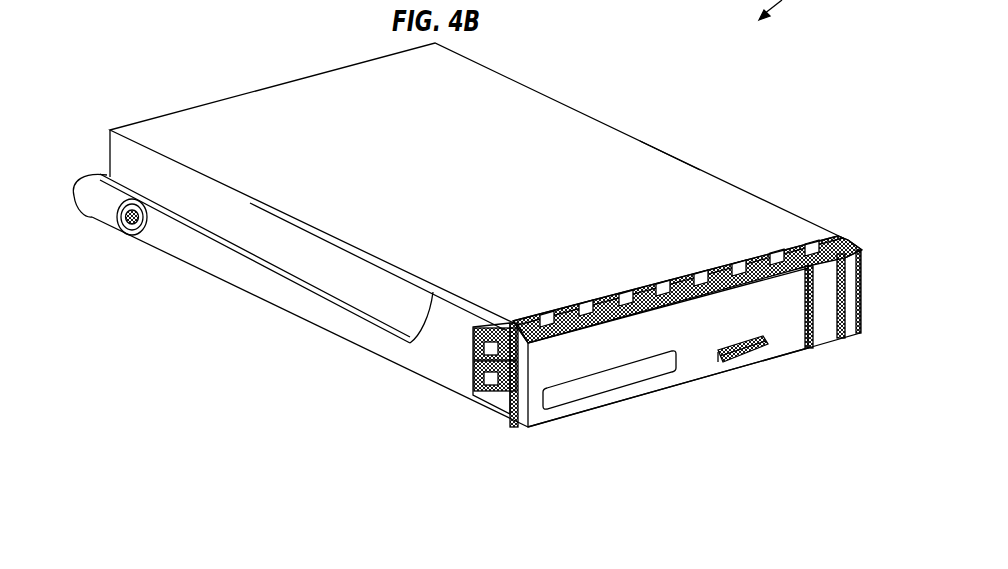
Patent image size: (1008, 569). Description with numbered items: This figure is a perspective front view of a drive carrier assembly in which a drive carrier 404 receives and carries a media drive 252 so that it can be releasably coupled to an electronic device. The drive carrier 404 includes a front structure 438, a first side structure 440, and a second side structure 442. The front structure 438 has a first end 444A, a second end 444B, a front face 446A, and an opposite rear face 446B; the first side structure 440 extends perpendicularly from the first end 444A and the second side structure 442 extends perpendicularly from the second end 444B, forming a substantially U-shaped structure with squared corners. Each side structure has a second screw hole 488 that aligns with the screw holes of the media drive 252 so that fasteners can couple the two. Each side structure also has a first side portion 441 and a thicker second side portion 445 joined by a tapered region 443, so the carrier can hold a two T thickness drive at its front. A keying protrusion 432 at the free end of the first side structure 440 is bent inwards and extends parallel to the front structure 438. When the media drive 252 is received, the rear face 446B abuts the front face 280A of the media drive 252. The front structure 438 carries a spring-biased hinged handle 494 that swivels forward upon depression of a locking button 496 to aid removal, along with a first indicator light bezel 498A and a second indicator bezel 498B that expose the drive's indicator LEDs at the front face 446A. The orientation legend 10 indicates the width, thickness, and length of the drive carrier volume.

The media drive 252 is at (557, 136).
The drive carrier 404 is at (185, 210).
The second side structure 442 is at (700, 167).
The keying protrusion 432 is at (103, 180).
The second screw hole 488 is at (128, 222).
The first side structure 440 is at (227, 272).
The first side portion 441 is at (320, 316).
The tapered region 443 is at (412, 340).
The second side portion 445 is at (452, 376).
The front structure 438 is at (713, 267).
The front face of the media drive 280A is at (712, 267).
The rear face 446B is at (632, 272).
The first end 444A is at (523, 317).
The second end 444B is at (838, 234).
The locking button 496 is at (832, 317).
The hinged handle 494 is at (620, 407).
The second indicator bezel 498B is at (764, 351).
The first indicator light bezel 498A is at (725, 366).
The front face 446A is at (752, 390).
The orientation legend 10 is at (173, 568).